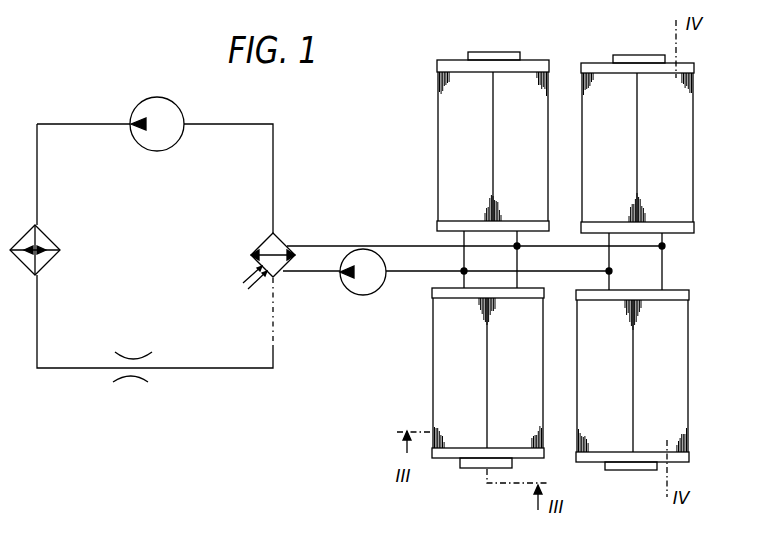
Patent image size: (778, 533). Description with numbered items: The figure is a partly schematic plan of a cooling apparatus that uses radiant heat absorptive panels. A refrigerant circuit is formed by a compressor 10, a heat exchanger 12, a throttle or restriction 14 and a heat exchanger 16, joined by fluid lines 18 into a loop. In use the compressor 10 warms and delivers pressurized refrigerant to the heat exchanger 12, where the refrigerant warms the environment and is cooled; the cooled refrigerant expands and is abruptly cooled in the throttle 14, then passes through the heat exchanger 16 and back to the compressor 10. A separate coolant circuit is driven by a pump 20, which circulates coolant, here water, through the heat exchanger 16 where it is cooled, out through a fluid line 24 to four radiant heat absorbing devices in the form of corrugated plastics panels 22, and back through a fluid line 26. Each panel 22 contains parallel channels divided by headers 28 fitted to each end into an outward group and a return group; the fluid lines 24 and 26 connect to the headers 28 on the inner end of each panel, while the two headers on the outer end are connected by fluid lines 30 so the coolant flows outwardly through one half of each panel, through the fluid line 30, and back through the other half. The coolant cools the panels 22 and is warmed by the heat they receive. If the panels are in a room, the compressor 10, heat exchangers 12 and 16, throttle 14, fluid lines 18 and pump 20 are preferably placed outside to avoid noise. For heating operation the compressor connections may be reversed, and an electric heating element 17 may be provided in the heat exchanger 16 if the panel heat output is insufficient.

The compressor 10 is at (177, 109).
The heat exchanger 12 is at (62, 248).
The throttle 14 is at (133, 360).
The heat exchanger 16 is at (258, 242).
The electric heating element 17 is at (241, 284).
The fluid lines 18 is at (77, 123).
The pump 20 is at (352, 292).
The corrugated plastics panels 22 is at (437, 138).
The fluid line 24 is at (402, 245).
The fluid line 26 is at (402, 273).
The header 28 is at (437, 65).
The fluid lines 30 is at (497, 52).